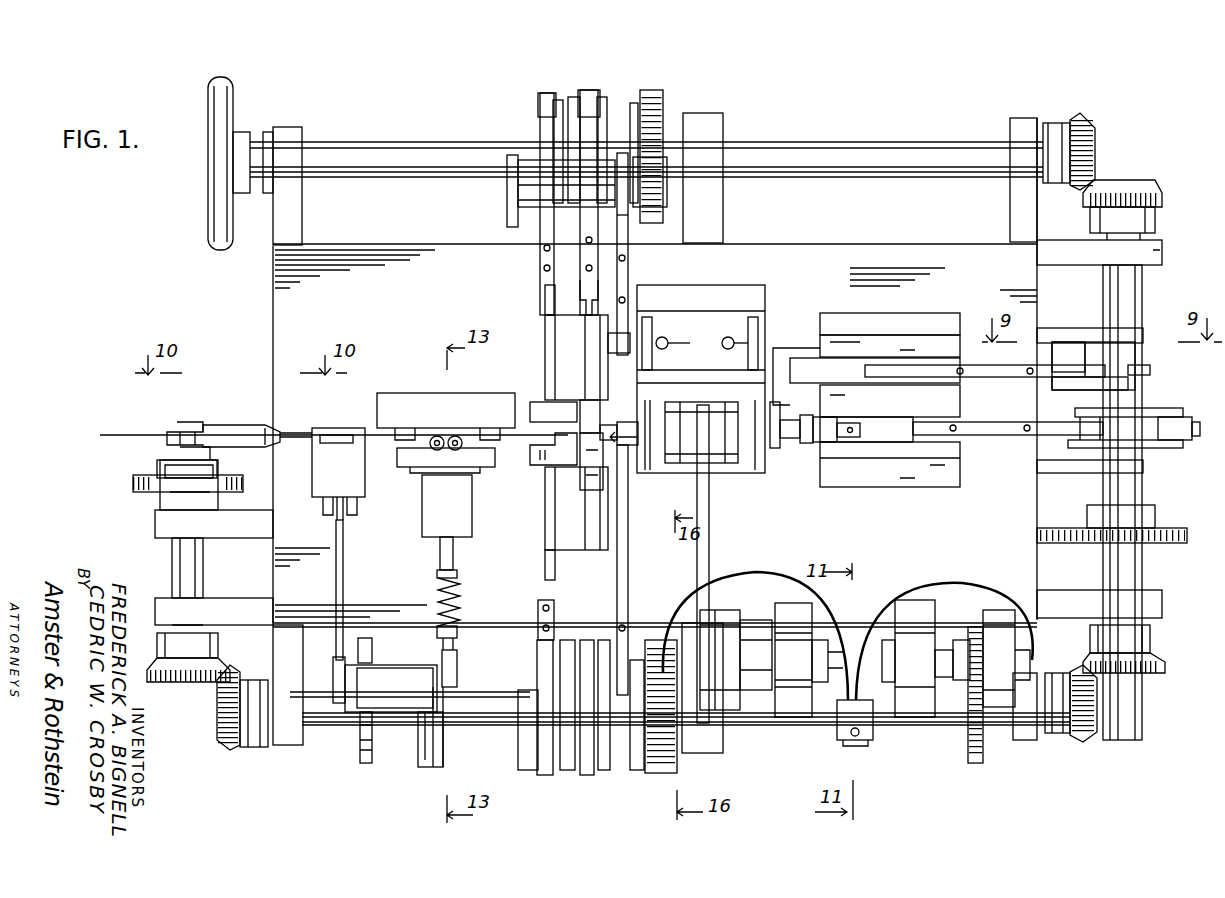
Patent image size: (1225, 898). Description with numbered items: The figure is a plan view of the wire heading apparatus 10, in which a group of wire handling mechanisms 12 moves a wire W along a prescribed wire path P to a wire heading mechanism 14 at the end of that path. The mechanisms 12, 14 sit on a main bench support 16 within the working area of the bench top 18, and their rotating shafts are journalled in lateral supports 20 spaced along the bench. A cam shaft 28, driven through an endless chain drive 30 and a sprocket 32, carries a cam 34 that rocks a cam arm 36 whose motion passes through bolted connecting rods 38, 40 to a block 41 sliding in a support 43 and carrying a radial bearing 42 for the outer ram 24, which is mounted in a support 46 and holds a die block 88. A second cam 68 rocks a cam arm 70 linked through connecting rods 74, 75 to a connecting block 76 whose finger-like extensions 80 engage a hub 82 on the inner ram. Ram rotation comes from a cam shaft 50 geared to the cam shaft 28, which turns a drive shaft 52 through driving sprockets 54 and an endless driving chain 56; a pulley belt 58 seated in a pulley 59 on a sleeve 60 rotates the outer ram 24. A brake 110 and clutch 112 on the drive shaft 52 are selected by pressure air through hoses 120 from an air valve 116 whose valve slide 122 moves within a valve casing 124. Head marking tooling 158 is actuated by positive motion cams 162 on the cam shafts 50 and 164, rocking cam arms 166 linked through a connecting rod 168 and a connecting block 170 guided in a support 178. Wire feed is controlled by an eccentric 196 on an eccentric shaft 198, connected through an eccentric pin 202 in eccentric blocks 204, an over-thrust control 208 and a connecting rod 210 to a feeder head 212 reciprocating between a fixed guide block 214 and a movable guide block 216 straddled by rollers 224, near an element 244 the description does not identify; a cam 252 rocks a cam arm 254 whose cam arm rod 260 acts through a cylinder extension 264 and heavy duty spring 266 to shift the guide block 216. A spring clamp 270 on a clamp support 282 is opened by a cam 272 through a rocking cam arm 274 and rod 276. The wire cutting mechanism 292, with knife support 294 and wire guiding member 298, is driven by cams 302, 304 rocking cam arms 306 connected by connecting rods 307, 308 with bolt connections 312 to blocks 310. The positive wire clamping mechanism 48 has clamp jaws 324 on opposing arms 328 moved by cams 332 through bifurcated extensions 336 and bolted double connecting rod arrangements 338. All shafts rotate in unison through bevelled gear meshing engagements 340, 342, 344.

The wire heading apparatus 10 is at (1160, 90).
The wire handling mechanisms 12 is at (481, 275).
The wire heading mechanism 14 is at (806, 331).
The main bench support 16 is at (272, 316).
The bench top 18 is at (300, 328).
The lateral supports 20 is at (292, 130).
The outer ram 24 is at (630, 447).
The cam shaft 28 is at (1142, 302).
The endless chain drive 30 is at (1185, 542).
The sprocket 32 is at (1160, 532).
The cam 34 is at (1152, 371).
The cam arm 36 is at (1046, 382).
The connecting rod 38 is at (1060, 347).
The connecting rod 40 is at (945, 379).
The block 41 is at (875, 370).
The radial bearing 42 is at (776, 460).
The support 43 is at (910, 310).
The support 46 is at (723, 380).
The wire clamping mechanism 48 is at (590, 472).
The cam shaft 50 is at (316, 737).
The drive shaft 52 is at (945, 652).
The driving sprockets 54 is at (985, 754).
The endless driving chain 56 is at (974, 768).
The pulley belt 58 is at (710, 557).
The pulley 59 is at (692, 464).
The sleeve 60 is at (730, 464).
The cam 68 is at (1168, 416).
The cam arm 70 is at (1183, 444).
The connecting rod 74 is at (1034, 440).
The connecting rod 75 is at (995, 440).
The connecting block 76 is at (866, 429).
The finger-like extensions 80 is at (816, 460).
The hub 82 is at (822, 430).
The die block 88 is at (614, 428).
The brake 110 is at (730, 629).
The clutch 112 is at (995, 630).
The air valve 116 is at (874, 750).
The hoses 120 is at (895, 630).
The valve slide 122 is at (852, 742).
The valve casing 124 is at (840, 732).
The tooling 158 is at (637, 438).
The positive motion cams 162 is at (660, 96).
The cam shaft 164 is at (845, 141).
The cam arms 166 is at (635, 103).
The connecting rod 168 is at (628, 226).
The connecting block 170 is at (628, 278).
The support 178 is at (576, 432).
The eccentric 196 is at (133, 483).
The eccentric shaft 198 is at (185, 582).
The eccentric pin 202 is at (165, 462).
The eccentric blocks 204 is at (214, 470).
The over-thrust control 208 is at (250, 427).
The connecting rod 210 is at (306, 442).
The feeder head 212 is at (420, 388).
The fixed guide block 214 is at (460, 397).
The movable guide block 216 is at (402, 459).
The rollers 224 is at (436, 438).
The block 244 is at (425, 512).
The cam 252 is at (420, 750).
The cam arm 254 is at (433, 767).
The cam arm rod 260 is at (440, 568).
The cylinder extension 264 is at (440, 588).
The heavy duty spring 266 is at (440, 608).
The spring clamp 270 is at (326, 418).
The cam 272 is at (365, 759).
The rocking cam arm 274 is at (358, 670).
The rod 276 is at (335, 592).
The clamp support 282 is at (315, 482).
The wire cutting mechanism 292 is at (543, 392).
The knife support 294 is at (540, 407).
The wire guiding member 298 is at (536, 457).
The cam 302 is at (532, 133).
The cam 304 is at (545, 748).
The cam arm 306 is at (556, 100).
The connecting rod 307 is at (548, 212).
The connecting rod 308 is at (540, 261).
The block 310 is at (545, 317).
The bolt connection 312 is at (540, 632).
The clamp jaws 324 is at (576, 97).
The opposing arms 328 is at (588, 402).
The cam 332 is at (600, 122).
The bifurcated extension 336 is at (572, 662).
The bolted double connecting rod arrangement 338 is at (568, 272).
The bevelled gear meshing engagement 340 is at (1128, 180).
The bevelled gear meshing engagement 342 is at (1121, 702).
The bevelled gear meshing engagement 344 is at (204, 704).
The wire path P is at (126, 438).
The wire W is at (67, 433).